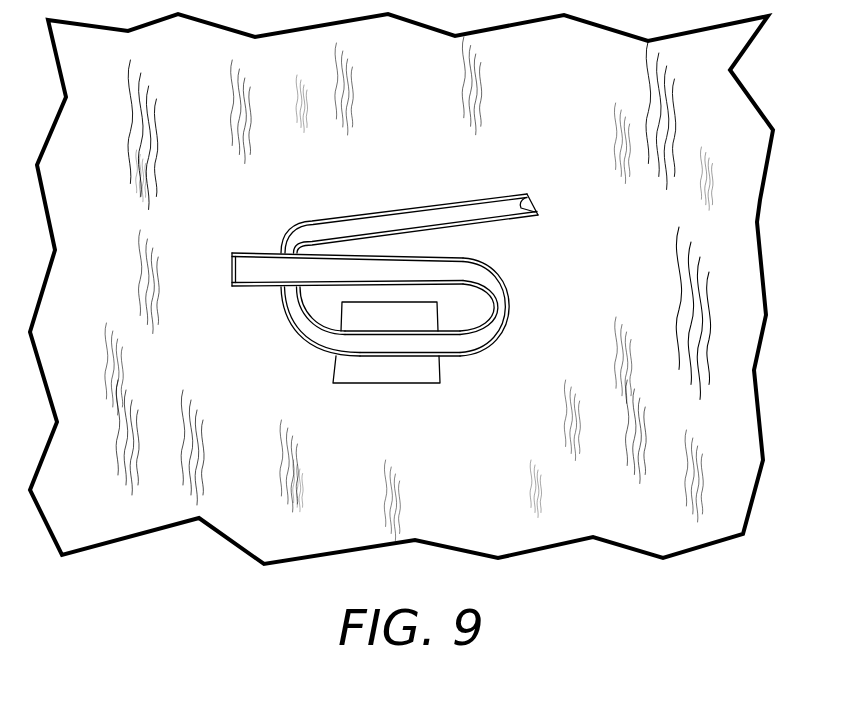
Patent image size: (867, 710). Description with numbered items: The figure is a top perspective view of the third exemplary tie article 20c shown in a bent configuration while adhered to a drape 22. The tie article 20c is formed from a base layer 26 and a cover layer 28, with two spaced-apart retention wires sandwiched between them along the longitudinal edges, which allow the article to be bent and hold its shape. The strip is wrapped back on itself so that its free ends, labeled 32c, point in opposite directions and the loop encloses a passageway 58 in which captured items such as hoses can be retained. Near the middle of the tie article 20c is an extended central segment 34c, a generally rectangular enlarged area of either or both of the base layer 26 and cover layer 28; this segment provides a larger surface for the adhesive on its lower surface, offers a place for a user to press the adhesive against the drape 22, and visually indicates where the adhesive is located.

The tie article 20c is at (390, 242).
The drape 22 is at (460, 449).
The base layer 26 is at (260, 270).
The cover layer 28 is at (457, 348).
The free end of arm 32c is at (253, 304).
The extended central segment 34c is at (399, 375).
The passageway 58 is at (467, 305).